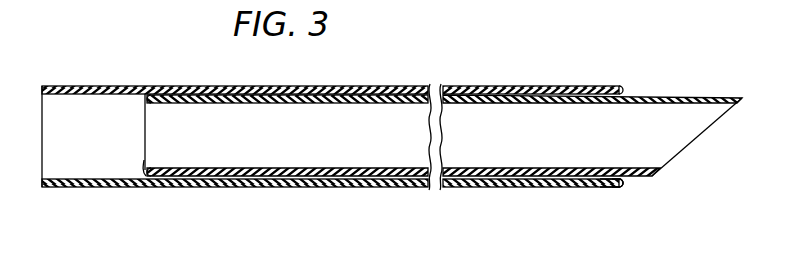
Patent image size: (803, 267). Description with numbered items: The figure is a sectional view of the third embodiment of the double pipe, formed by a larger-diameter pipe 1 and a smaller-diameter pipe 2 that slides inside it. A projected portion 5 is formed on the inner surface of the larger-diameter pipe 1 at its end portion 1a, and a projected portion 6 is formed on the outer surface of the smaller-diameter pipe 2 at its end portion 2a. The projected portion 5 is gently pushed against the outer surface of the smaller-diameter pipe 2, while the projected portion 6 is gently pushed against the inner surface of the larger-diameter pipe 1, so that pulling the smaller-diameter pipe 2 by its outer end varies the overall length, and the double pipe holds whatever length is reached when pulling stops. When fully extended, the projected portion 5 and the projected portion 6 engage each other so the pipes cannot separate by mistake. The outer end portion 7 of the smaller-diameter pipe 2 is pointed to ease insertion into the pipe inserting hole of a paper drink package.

The larger-diameter pipe 1 is at (70, 86).
The end portion of the larger-diameter pipe 1a is at (627, 182).
The smaller-diameter pipe 2 is at (668, 96).
The end portion of the smaller-diameter pipe 2a is at (144, 131).
The projected portion 5 is at (622, 188).
The projected portion 6 is at (147, 167).
The outer end portion 7 is at (716, 125).